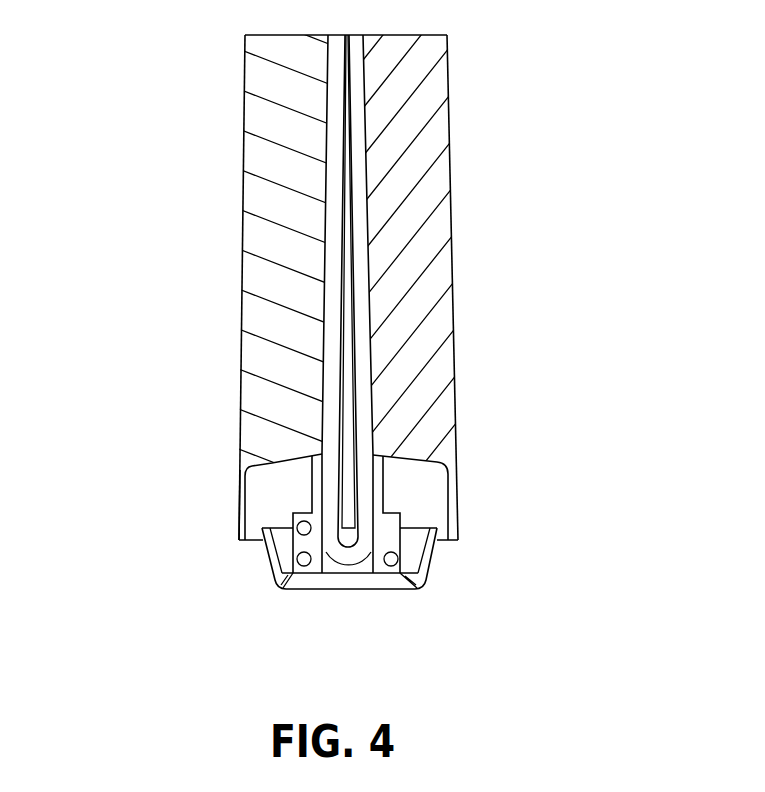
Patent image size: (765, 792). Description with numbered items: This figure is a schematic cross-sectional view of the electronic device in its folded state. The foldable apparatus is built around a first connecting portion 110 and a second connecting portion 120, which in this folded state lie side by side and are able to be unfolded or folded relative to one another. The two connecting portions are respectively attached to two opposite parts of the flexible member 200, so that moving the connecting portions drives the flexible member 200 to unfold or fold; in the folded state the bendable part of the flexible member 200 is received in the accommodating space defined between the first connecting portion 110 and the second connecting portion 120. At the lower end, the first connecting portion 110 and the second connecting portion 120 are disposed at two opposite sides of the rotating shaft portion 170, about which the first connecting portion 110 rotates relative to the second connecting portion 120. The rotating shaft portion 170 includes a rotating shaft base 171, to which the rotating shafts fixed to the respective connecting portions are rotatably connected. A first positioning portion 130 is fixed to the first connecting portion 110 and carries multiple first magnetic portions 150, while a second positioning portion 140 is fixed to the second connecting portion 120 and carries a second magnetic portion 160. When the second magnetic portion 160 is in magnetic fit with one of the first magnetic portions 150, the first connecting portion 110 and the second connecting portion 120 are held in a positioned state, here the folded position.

The first connecting portion 110 is at (280, 203).
The second connecting portion 120 is at (415, 212).
The first positioning portion 130 is at (315, 493).
The second positioning portion 140 is at (385, 480).
The first magnetic portion 150 is at (262, 527).
The second magnetic portion 160 is at (408, 556).
The rotating shaft portion 170 is at (365, 574).
The rotating shaft base 171 is at (285, 572).
The flexible member 200 is at (355, 127).